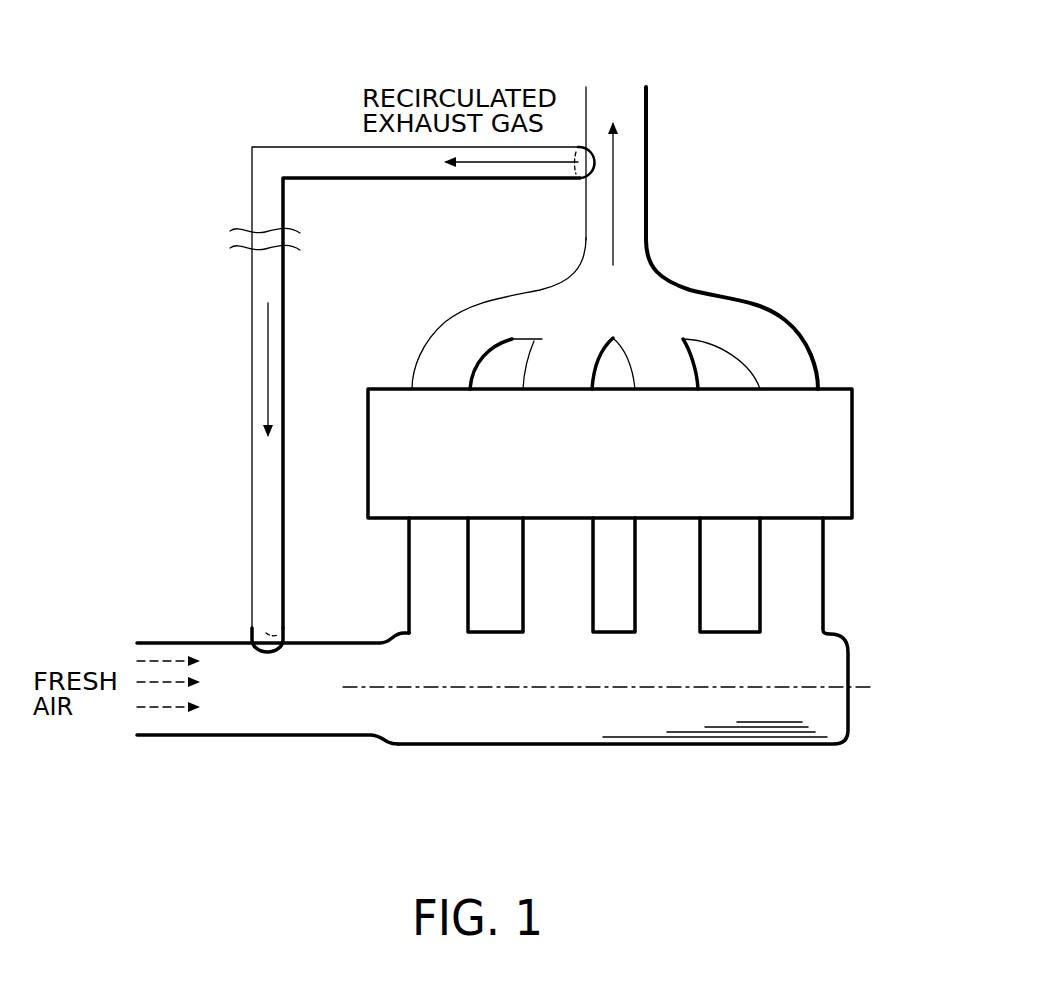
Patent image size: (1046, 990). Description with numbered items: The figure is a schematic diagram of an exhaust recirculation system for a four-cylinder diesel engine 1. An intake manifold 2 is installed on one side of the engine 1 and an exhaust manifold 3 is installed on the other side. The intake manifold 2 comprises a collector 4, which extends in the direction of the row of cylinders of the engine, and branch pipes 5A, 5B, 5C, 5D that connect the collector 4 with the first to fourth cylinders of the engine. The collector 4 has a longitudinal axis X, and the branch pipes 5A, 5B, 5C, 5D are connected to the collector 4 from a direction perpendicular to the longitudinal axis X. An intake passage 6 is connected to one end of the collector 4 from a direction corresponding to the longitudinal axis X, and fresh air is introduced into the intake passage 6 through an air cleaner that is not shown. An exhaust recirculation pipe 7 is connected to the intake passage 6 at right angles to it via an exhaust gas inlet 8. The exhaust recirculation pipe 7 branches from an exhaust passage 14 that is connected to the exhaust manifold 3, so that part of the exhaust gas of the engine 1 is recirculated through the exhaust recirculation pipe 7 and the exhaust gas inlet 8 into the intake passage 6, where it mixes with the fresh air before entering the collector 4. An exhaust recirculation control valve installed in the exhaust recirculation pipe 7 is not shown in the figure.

The four-cylinder diesel engine 1 is at (838, 398).
The intake manifold 2 is at (705, 752).
The exhaust manifold 3 is at (712, 289).
The collector 4 is at (588, 714).
The branch pipe 5A is at (795, 562).
The branch pipe 5B is at (670, 572).
The branch pipe 5C is at (541, 593).
The branch pipe 5D is at (420, 593).
The intake passage 6 is at (287, 717).
The exhaust recirculation pipe 7 is at (252, 300).
The exhaust gas inlet 8 is at (262, 637).
The exhaust passage 14 is at (648, 120).
The longitudinal axis X is at (622, 688).